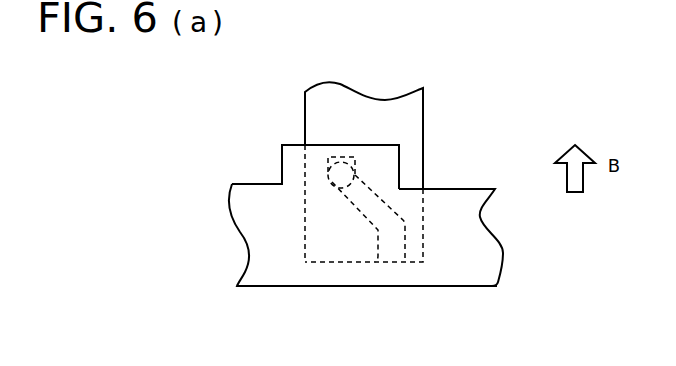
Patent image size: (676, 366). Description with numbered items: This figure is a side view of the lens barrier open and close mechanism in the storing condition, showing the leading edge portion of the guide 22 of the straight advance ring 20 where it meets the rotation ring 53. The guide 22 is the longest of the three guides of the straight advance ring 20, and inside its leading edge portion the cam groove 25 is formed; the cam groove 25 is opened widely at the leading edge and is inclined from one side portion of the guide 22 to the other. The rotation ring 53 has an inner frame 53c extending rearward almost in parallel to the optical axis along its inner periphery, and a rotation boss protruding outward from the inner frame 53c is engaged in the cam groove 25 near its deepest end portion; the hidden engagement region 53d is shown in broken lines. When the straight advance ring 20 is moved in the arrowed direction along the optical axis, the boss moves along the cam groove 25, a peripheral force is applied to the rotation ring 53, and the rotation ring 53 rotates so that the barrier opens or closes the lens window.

The straight advance ring 20 is at (305, 111).
The guide 22 is at (413, 118).
The cam groove 25 is at (355, 202).
The rotation ring 53 is at (397, 288).
The inner frame 53c is at (462, 272).
The engaging hole 53d is at (333, 178).